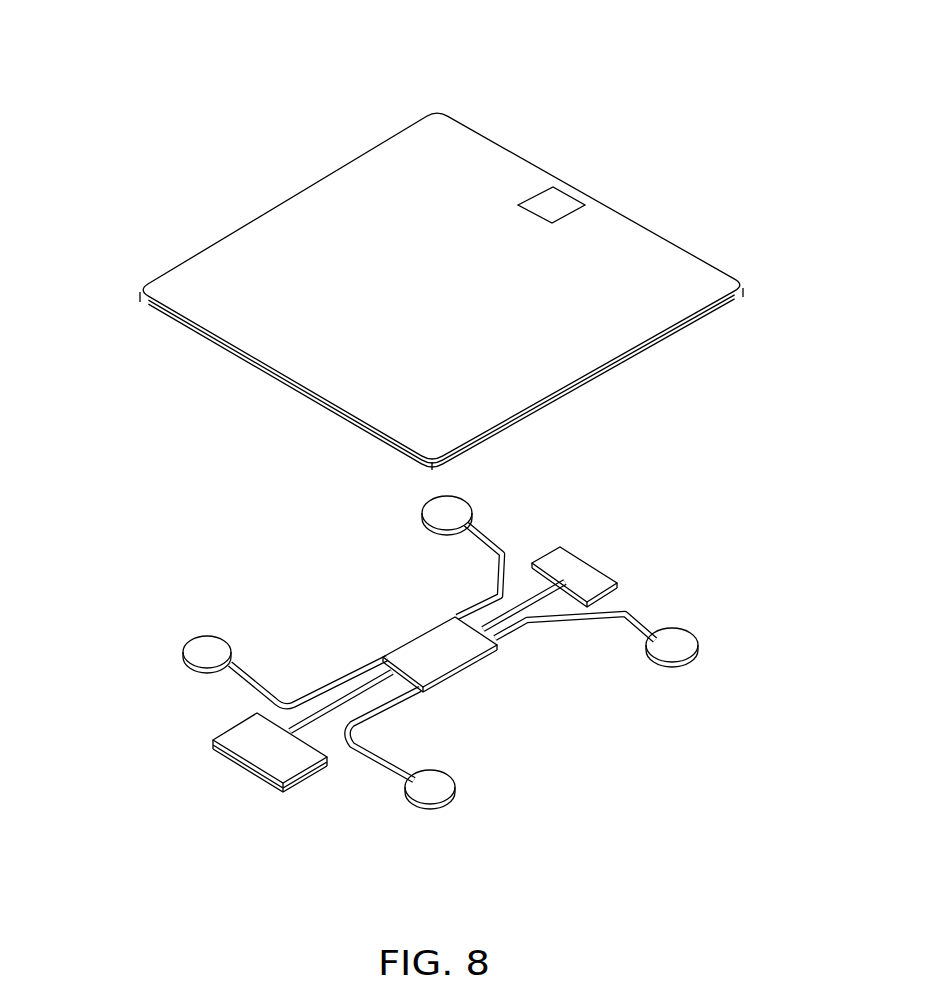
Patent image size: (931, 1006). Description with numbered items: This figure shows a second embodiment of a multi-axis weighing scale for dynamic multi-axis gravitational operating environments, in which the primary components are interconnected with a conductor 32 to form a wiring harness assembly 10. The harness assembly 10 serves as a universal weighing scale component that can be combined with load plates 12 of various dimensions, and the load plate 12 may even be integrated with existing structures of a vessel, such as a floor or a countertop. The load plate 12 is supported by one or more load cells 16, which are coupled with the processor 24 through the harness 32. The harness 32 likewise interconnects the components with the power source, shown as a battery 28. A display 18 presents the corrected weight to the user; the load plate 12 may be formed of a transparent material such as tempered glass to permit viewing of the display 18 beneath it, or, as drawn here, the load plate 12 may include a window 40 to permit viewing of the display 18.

The wiring harness assembly 10 is at (170, 153).
The load plate 12 is at (662, 268).
The load cells 16 is at (427, 512).
The display 18 is at (613, 563).
The processor 24 is at (432, 663).
The battery 28 is at (290, 750).
The conductor 32 is at (333, 693).
The window 40 is at (547, 207).